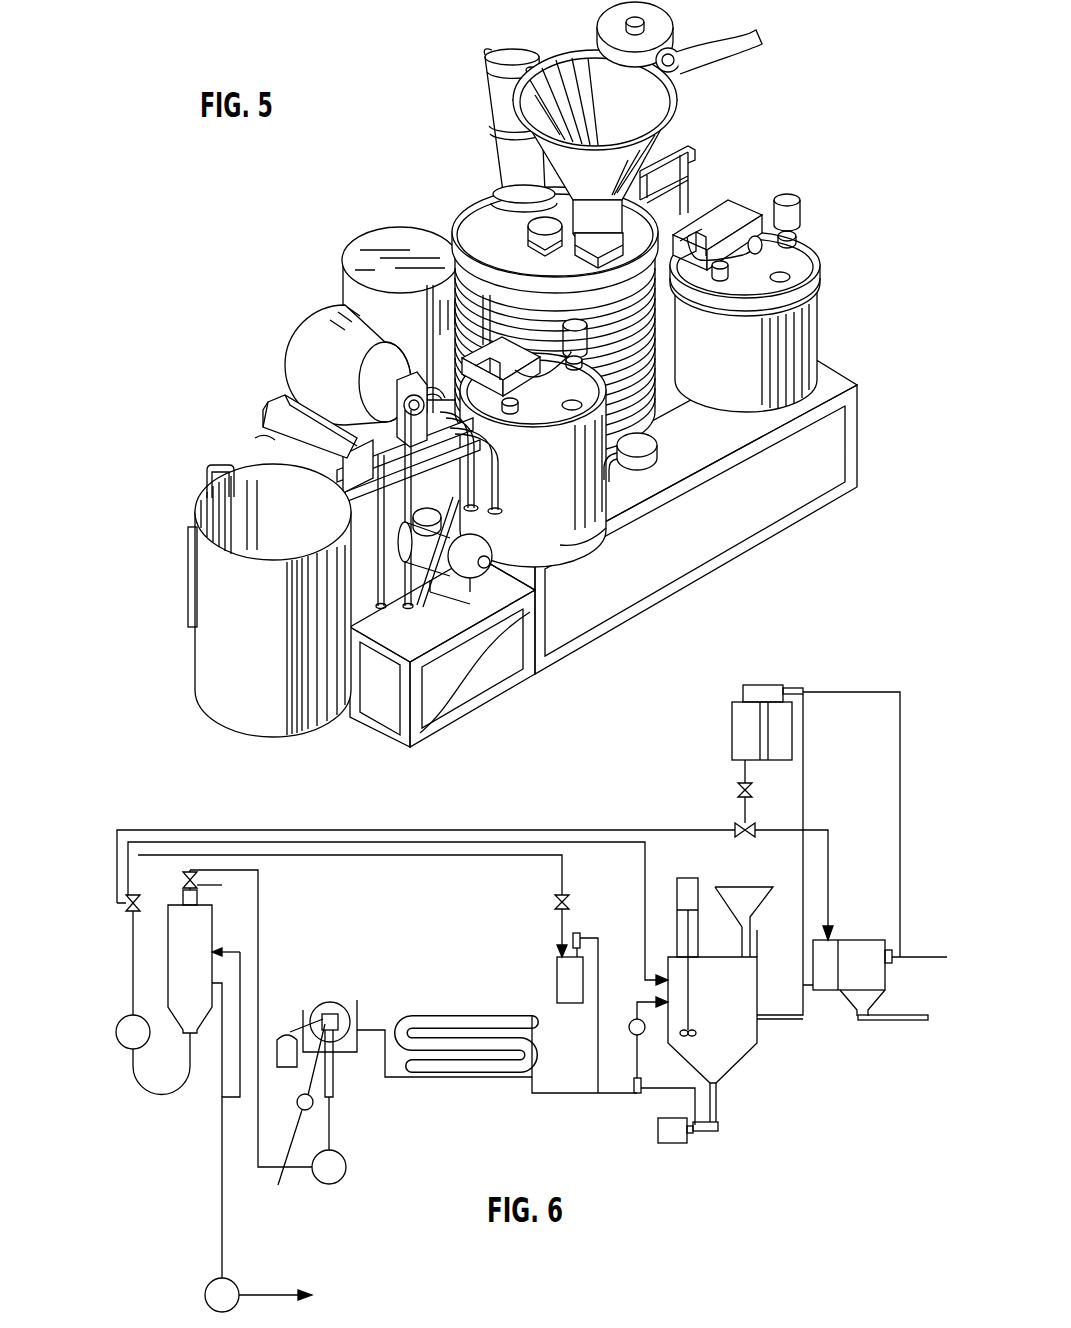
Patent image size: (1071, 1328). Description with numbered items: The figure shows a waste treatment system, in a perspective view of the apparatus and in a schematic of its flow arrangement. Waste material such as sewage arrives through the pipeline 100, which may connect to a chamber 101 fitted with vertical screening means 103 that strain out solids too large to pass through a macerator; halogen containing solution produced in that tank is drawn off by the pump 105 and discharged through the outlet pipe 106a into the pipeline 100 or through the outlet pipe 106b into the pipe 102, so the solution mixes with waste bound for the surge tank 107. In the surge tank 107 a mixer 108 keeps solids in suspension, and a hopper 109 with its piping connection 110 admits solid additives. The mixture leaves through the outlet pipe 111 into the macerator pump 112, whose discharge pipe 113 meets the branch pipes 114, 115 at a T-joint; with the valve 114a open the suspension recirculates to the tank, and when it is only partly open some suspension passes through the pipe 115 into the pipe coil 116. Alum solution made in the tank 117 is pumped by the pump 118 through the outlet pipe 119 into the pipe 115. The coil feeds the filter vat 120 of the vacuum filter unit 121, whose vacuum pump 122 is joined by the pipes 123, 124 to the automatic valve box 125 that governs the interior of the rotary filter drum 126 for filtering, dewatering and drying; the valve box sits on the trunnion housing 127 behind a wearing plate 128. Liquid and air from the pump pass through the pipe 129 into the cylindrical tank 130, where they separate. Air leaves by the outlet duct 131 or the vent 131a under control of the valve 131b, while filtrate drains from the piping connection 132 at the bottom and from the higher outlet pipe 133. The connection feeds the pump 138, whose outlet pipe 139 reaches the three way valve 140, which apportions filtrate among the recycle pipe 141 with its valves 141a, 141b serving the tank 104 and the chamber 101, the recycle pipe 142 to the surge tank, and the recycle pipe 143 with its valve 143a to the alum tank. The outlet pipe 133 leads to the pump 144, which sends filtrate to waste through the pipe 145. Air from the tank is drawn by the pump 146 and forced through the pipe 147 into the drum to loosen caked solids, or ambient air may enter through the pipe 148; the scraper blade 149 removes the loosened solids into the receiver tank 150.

In FIG. 5, the pipeline 100 is at (748, 47).
In FIG. 6, the pipeline 100 is at (920, 958).
In FIG. 5, the chamber 101 is at (660, 26).
In FIG. 6, the chamber 101 is at (876, 982).
In FIG. 6, the pipe 102 is at (810, 1015).
In FIG. 6, the vertical screening means 103 is at (840, 955).
In FIG. 5, the tank 104 is at (818, 305).
In FIG. 6, the tank 104 is at (732, 717).
In FIG. 5, the pump 105 is at (733, 200).
In FIG. 6, the pump 105 is at (803, 660).
In FIG. 6, the outlet pipe 106a is at (900, 840).
In FIG. 6, the outlet pipe 106b is at (804, 800).
In FIG. 5, the surge tank 107 is at (482, 204).
In FIG. 6, the surge tank 107 is at (753, 1035).
In FIG. 5, the mixer 108 is at (512, 53).
In FIG. 6, the mixer 108 is at (677, 878).
In FIG. 5, the hopper 109 is at (678, 107).
In FIG. 6, the hopper 109 is at (766, 893).
In FIG. 6, the piping connection 110 is at (752, 947).
In FIG. 5, the outlet pipe 111 is at (647, 428).
In FIG. 6, the outlet pipe 111 is at (716, 1100).
In FIG. 5, the macerator pump 112 is at (648, 470).
In FIG. 6, the macerator pump 112 is at (707, 1133).
In FIG. 5, the pipe 113 is at (604, 480).
In FIG. 6, the pipe 113 is at (663, 1088).
In FIG. 6, the branch pipe 114 is at (641, 1050).
In FIG. 6, the valve 114a is at (629, 1027).
In FIG. 6, the branch pipe 115 is at (562, 1094).
In FIG. 5, the pipe coil 116 is at (656, 352).
In FIG. 6, the pipe coil 116 is at (462, 1078).
In FIG. 5, the tank 117 is at (578, 523).
In FIG. 6, the tank 117 is at (557, 977).
In FIG. 5, the pump 118 is at (513, 337).
In FIG. 6, the pump 118 is at (577, 933).
In FIG. 6, the outlet pipe 119 is at (598, 1055).
In FIG. 6, the filter vat 120 is at (372, 1057).
In FIG. 5, the vacuum filter unit 121 is at (280, 372).
In FIG. 6, the vacuum filter unit 121 is at (350, 998).
In FIG. 5, the vacuum pump 122 is at (471, 580).
In FIG. 6, the vacuum pump 122 is at (338, 1178).
In FIG. 5, the pipe 123 is at (497, 462).
In FIG. 6, the pipe 123 is at (348, 1057).
In FIG. 5, the pipe 124 is at (493, 479).
In FIG. 6, the pipe 124 is at (337, 1060).
In FIG. 5, the automatic valve box 125 is at (447, 323).
In FIG. 6, the automatic valve box 125 is at (350, 1020).
In FIG. 5, the rotary filter drum 126 is at (314, 345).
In FIG. 6, the rotary filter drum 126 is at (337, 996).
In FIG. 5, the housing 127 is at (397, 353).
In FIG. 5, the wearing plate 128 is at (366, 400).
In FIG. 5, the pipe 129 is at (495, 497).
In FIG. 6, the pipe 129 is at (222, 1098).
In FIG. 5, the cylindrical tank 130 is at (383, 243).
In FIG. 6, the cylindrical tank 130 is at (212, 924).
In FIG. 6, the outlet duct 131 is at (258, 880).
In FIG. 6, the vent 131a is at (212, 884).
In FIG. 6, the valve 131b is at (188, 872).
In FIG. 6, the piping connection 132 is at (143, 1088).
In FIG. 6, the outlet pipe 133 is at (222, 1220).
In FIG. 6, the pump 138 is at (117, 1035).
In FIG. 6, the outlet pipe 139 is at (132, 968).
In FIG. 6, the three way valve 140 is at (126, 907).
In FIG. 6, the recycle pipe 141 is at (530, 800).
In FIG. 6, the valve 141a is at (745, 837).
In FIG. 6, the valve 141b is at (740, 792).
In FIG. 6, the recycle pipe 142 is at (613, 842).
In FIG. 6, the recycle pipe 143 is at (342, 857).
In FIG. 6, the valve 143a is at (556, 904).
In FIG. 6, the pump 144 is at (205, 1290).
In FIG. 6, the pipe 145 is at (262, 1292).
In FIG. 6, the pump 146 is at (298, 1108).
In FIG. 5, the pipe 147 is at (413, 602).
In FIG. 6, the pipe 147 is at (308, 1068).
In FIG. 6, the pipe 148 is at (283, 1178).
In FIG. 5, the scraper blade 149 is at (277, 447).
In FIG. 6, the scraper blade 149 is at (320, 1003).
In FIG. 5, the receiver tank 150 is at (210, 652).
In FIG. 6, the receiver tank 150 is at (280, 1037).